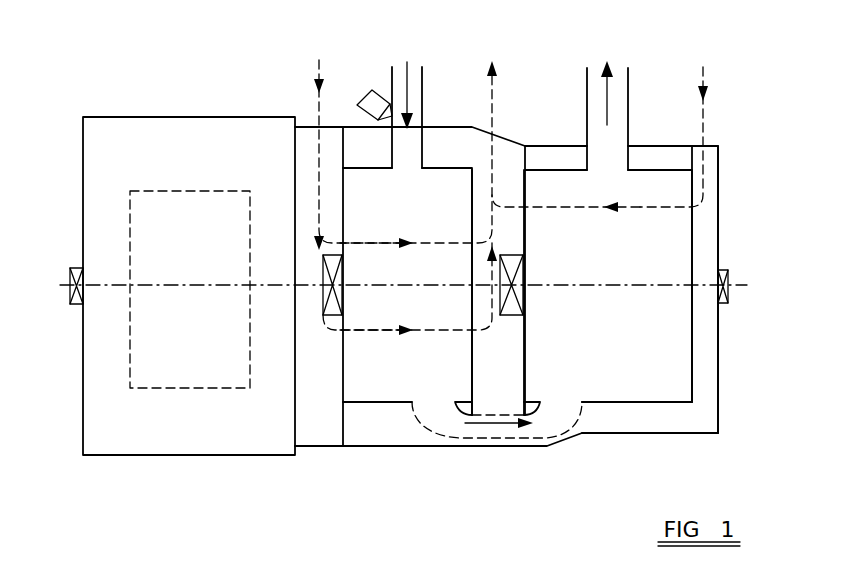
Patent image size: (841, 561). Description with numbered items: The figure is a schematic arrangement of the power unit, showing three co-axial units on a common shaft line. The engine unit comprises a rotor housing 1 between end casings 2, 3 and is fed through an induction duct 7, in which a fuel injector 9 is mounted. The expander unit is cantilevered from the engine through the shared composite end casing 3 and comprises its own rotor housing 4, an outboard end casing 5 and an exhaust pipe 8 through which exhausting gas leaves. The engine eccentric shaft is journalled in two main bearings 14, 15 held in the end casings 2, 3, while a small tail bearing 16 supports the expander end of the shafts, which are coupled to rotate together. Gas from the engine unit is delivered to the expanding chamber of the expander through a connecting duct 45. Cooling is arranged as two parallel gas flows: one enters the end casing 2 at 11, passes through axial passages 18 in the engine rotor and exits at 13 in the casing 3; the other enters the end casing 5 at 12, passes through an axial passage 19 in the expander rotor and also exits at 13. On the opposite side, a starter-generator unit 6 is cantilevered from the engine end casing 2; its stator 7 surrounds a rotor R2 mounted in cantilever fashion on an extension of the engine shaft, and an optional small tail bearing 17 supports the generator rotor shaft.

The rotor housing 1 is at (388, 434).
The end casing 2 is at (321, 438).
The composite end casing 3 is at (503, 362).
The rotor housing 4 is at (625, 419).
The outboard end casing 5 is at (704, 367).
The starter-generator unit 6 is at (139, 438).
The induction duct 7 is at (423, 97).
The exhaust pipe 8 is at (630, 98).
The fuel injector 9 is at (372, 90).
The cooling gas inlet 11 is at (313, 75).
The cooling gas inlet 12 is at (706, 120).
The cooling gas outlet 13 is at (494, 110).
The main bearing 14 is at (323, 318).
The main bearing 15 is at (517, 280).
The tail bearing 16 is at (730, 282).
The tail bearing 17 is at (70, 282).
The axial passages 18 is at (381, 243).
The axial passage 19 is at (648, 210).
The connecting duct 45 is at (498, 431).
The rotor R2 is at (182, 192).